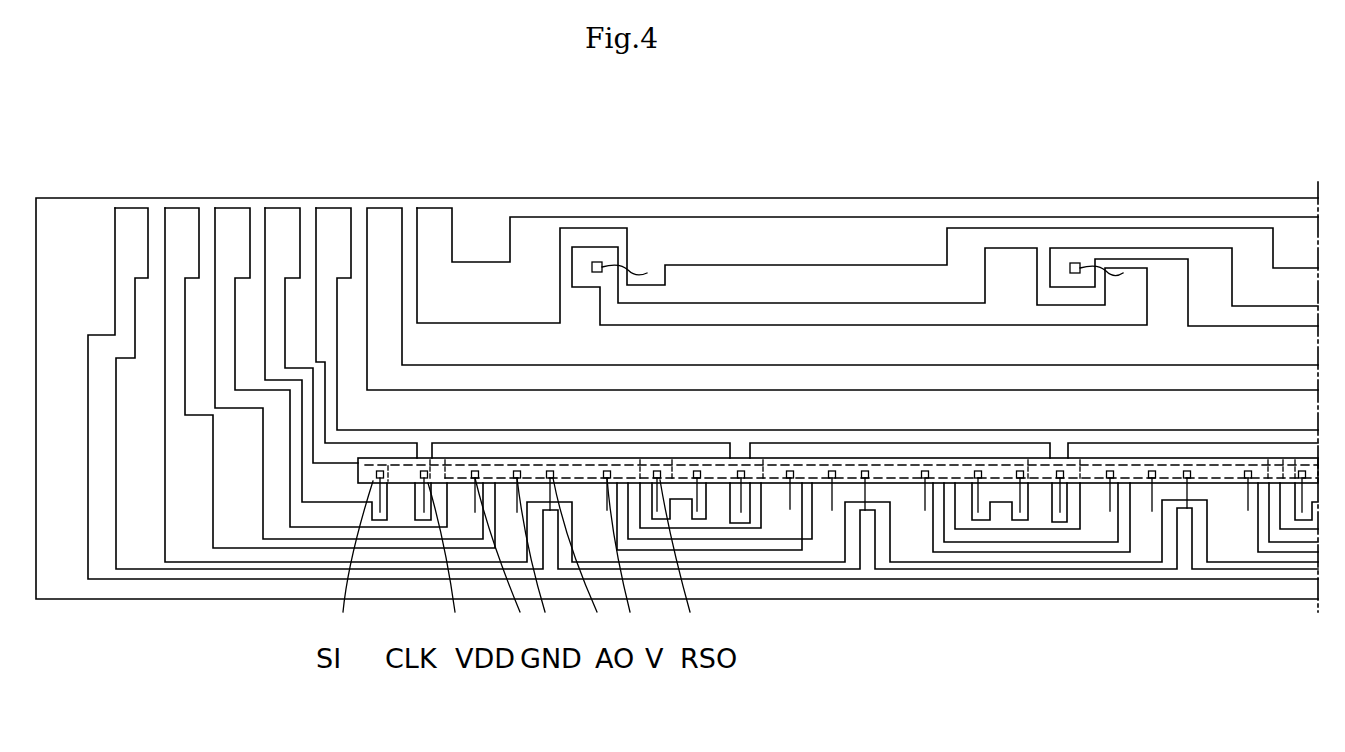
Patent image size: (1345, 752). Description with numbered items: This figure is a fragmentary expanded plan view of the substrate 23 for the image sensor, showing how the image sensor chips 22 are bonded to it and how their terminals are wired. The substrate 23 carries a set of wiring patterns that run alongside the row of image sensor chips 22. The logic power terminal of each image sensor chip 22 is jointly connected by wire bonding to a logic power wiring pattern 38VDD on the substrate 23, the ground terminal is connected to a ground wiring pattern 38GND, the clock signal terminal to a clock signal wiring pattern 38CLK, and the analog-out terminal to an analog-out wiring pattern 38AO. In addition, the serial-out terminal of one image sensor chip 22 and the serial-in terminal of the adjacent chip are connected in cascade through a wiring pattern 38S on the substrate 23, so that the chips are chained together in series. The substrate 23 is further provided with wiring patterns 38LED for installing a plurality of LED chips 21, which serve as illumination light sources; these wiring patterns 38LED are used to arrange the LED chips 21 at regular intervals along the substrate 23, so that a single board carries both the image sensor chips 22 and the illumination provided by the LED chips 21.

The LED chip 21 is at (597, 262).
The image sensor chip 22 is at (577, 458).
The substrate 23 is at (707, 198).
The LED wiring pattern 38LED is at (878, 378).
The clock signal wiring pattern 38CLK is at (777, 446).
The logic power wiring pattern 38VDD is at (283, 533).
The serial wiring pattern 38S is at (658, 476).
The ground wiring pattern 38GND is at (747, 557).
The analog-out wiring pattern 38AO is at (866, 575).